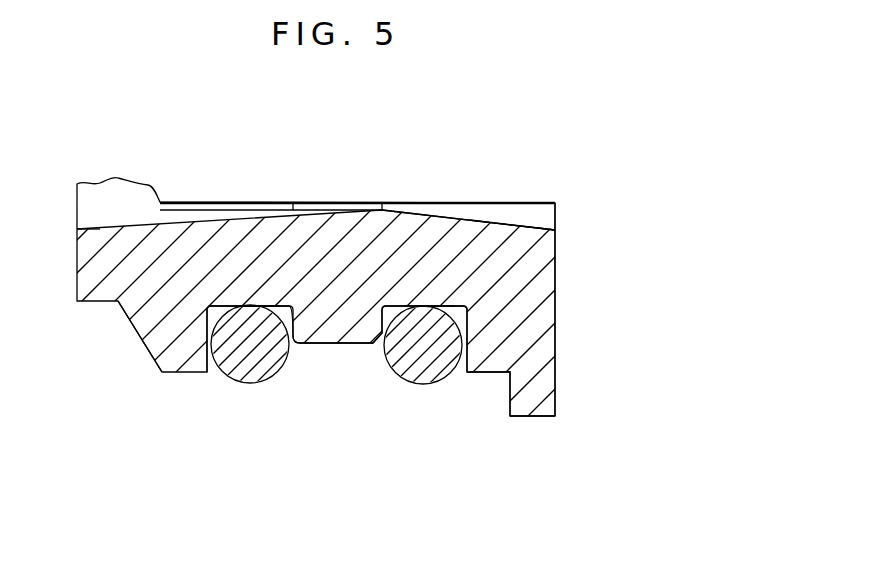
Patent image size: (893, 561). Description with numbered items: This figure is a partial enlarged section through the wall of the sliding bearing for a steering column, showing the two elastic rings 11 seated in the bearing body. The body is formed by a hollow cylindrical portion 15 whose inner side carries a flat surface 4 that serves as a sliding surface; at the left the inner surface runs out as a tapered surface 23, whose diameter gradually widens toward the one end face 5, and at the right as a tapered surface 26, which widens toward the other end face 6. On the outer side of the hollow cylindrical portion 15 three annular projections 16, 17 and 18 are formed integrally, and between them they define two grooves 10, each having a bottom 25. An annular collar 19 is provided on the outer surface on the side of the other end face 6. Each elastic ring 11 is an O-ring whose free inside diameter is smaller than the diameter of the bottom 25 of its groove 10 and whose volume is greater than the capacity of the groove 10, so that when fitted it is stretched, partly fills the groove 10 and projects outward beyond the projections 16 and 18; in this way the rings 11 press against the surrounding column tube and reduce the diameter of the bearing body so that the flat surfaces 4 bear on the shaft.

The flat surface 4 is at (337, 202).
The one end face 5 is at (77, 253).
The other end face 6 is at (555, 268).
The groove 10 is at (212, 367).
The elastic ring 11 is at (250, 365).
The hollow cylindrical portion 15 is at (540, 245).
The annular projection 16 is at (163, 335).
The annular projection 17 is at (330, 330).
The annular projection 18 is at (485, 362).
The annular collar 19 is at (530, 403).
The tapered surface 23 is at (93, 228).
The bottom of the groove 25 is at (260, 307).
The tapered surface 26 is at (537, 223).